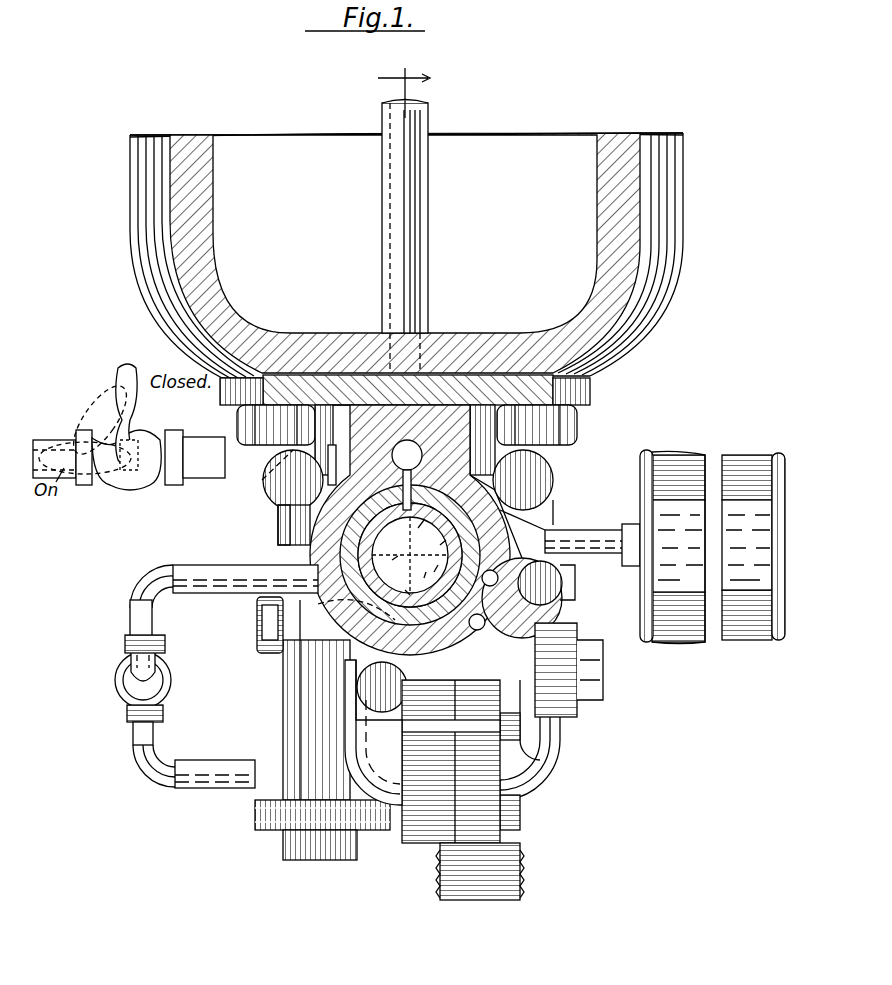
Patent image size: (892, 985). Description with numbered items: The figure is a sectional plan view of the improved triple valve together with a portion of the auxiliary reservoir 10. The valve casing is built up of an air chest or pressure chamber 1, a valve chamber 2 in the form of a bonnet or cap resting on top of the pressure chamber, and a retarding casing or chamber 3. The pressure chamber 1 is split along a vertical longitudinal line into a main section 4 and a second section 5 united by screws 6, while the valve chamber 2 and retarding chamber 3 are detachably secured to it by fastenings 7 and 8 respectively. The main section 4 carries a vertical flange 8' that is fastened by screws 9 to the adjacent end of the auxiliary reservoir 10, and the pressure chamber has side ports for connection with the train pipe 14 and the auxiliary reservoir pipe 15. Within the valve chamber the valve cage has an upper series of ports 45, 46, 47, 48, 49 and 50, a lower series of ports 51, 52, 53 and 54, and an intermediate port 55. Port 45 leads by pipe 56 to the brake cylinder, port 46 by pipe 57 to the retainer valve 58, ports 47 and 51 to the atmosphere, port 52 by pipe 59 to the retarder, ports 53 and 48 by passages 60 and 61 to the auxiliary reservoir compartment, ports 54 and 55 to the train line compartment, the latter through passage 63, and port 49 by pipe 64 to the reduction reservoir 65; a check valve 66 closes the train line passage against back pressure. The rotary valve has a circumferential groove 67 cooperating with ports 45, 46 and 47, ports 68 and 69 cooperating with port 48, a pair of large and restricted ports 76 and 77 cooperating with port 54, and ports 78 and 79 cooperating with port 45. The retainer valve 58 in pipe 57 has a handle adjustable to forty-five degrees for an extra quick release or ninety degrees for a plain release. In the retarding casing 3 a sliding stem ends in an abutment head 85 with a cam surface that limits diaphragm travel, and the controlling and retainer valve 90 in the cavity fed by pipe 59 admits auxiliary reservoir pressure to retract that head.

The air chest or pressure chamber 1 is at (430, 795).
The valve chamber 2 is at (412, 922).
The retarding casing or chamber 3 is at (292, 710).
The main section 4 is at (410, 740).
The section 5 is at (528, 792).
The screws or fastenings 6 is at (532, 768).
The screws or fastenings 7 is at (437, 544).
The screws or fastenings 8 is at (266, 641).
The vertical flange or extension 8' is at (424, 390).
The screws or fastenings 9 is at (245, 420).
The auxiliary reservoir 10 is at (612, 134).
The train pipe 14 is at (495, 892).
The auxiliary reservoir pipe 15 is at (280, 470).
The port 45 is at (523, 480).
The port 46 is at (293, 497).
The port 47 is at (282, 520).
The port 48 is at (358, 640).
The port 49 is at (540, 512).
The port 50 is at (546, 504).
The port 51 is at (340, 547).
The port 52 is at (252, 596).
The port 53 is at (355, 600).
The port 54 is at (548, 604).
The intermediate port 55 is at (548, 574).
The pipe 56 is at (425, 455).
The pipe 57 is at (332, 463).
The retainer valve 58 is at (124, 488).
The pipe 59 is at (133, 734).
The passage 60 is at (318, 660).
The passage 61 is at (348, 690).
The passage 63 is at (562, 586).
The pipe 64 is at (600, 530).
The reduction reservoir 65 is at (698, 458).
The check valve 66 is at (540, 632).
The circumferential groove 67 is at (410, 555).
The port 68 is at (390, 558).
The port 69 is at (406, 582).
The relatively large port 76 is at (425, 569).
The restricted port 77 is at (440, 562).
The port 78 is at (435, 547).
The port 79 is at (417, 530).
The abutment head 85 is at (84, 440).
The controlling and retainer valve 90 is at (118, 686).